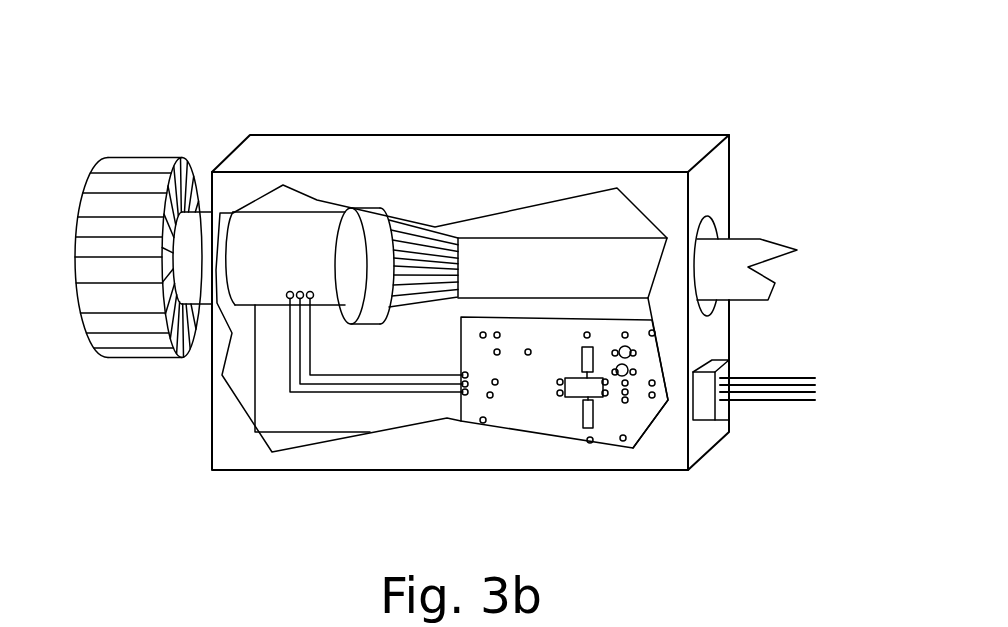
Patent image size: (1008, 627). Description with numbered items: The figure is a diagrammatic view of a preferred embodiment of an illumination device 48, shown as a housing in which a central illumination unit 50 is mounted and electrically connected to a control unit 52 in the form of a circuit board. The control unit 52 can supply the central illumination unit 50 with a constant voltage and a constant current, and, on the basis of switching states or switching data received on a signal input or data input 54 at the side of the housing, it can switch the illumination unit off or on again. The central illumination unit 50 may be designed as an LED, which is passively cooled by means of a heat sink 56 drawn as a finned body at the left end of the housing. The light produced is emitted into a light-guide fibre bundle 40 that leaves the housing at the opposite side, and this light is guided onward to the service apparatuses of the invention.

The illumination device 48 is at (479, 102).
The central illumination unit 50 is at (311, 198).
The control unit 52 is at (542, 432).
The signal input or data input 54 is at (703, 421).
The heat sink 56 is at (85, 332).
The light-guide fibre bundle 40 is at (758, 239).